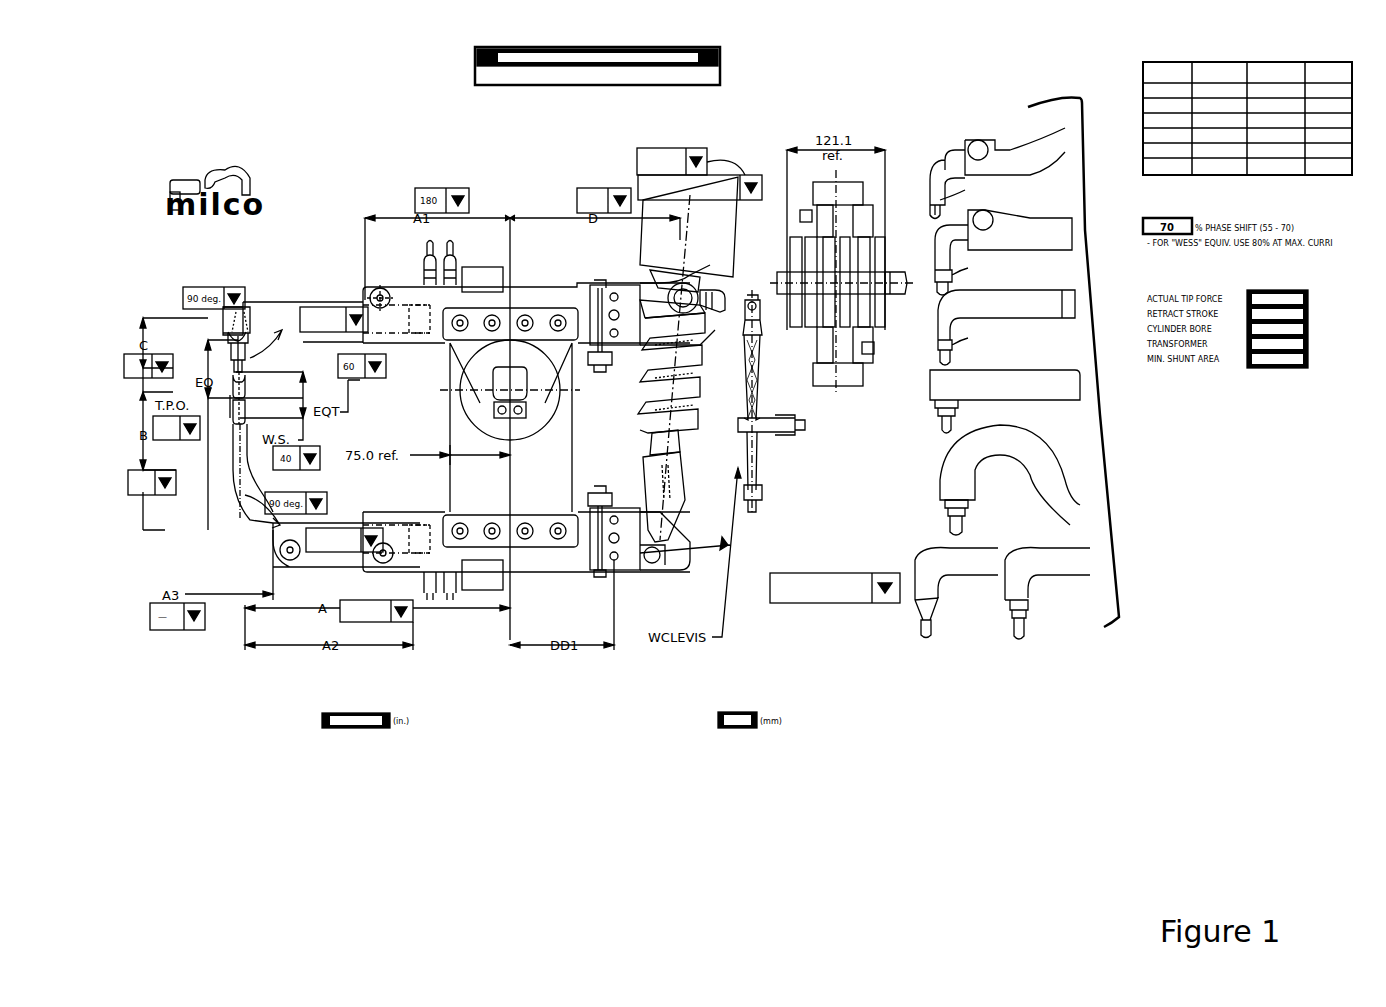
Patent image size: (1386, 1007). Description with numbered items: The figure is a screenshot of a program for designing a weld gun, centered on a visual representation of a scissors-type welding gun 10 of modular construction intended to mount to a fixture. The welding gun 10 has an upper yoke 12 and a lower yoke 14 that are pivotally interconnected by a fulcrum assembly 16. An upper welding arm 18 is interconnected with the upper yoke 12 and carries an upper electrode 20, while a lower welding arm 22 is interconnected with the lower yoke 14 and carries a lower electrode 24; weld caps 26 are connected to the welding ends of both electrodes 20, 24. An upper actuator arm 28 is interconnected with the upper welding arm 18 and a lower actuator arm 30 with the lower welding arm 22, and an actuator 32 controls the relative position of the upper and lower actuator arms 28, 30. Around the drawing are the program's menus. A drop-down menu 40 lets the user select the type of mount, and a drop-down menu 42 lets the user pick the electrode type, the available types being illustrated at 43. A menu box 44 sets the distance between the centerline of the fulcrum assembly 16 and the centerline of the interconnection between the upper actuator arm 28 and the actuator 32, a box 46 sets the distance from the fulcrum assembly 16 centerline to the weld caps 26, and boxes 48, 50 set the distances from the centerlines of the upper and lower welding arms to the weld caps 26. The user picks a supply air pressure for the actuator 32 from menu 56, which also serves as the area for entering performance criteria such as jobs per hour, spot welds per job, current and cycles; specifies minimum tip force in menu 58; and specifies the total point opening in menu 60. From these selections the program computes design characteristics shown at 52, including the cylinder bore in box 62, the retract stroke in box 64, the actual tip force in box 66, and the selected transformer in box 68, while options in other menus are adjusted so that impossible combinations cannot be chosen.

The welding gun 10 is at (420, 140).
The upper yoke 12 is at (570, 355).
The lower yoke 14 is at (560, 463).
The fulcrum assembly 16 is at (452, 410).
The upper welding arm 18 is at (533, 298).
The upper electrode 20 is at (272, 315).
The lower welding arm 22 is at (552, 556).
The lower electrode 24 is at (318, 548).
The weld caps 26 is at (250, 383).
The upper actuator arm 28 is at (633, 298).
The lower actuator arm 30 is at (633, 566).
The actuator 32 is at (700, 418).
The mount menu 40 is at (853, 597).
The electrode type menu 42 is at (337, 318).
The electrode type illustrations 43 is at (1100, 420).
The menu box 44 is at (596, 188).
The box 46 is at (381, 620).
The box 48 is at (125, 352).
The box 50 is at (127, 485).
The design characteristic values 52 is at (1292, 364).
The supply pressure menu and performance criteria box 56 is at (683, 152).
The tip force menu 58 is at (740, 182).
The TPO menu 60 is at (200, 435).
The cylinder bore box 62 is at (1308, 335).
The retract stroke box 64 is at (1308, 312).
The actual tip force box 66 is at (1300, 292).
The transformer box 68 is at (1247, 345).